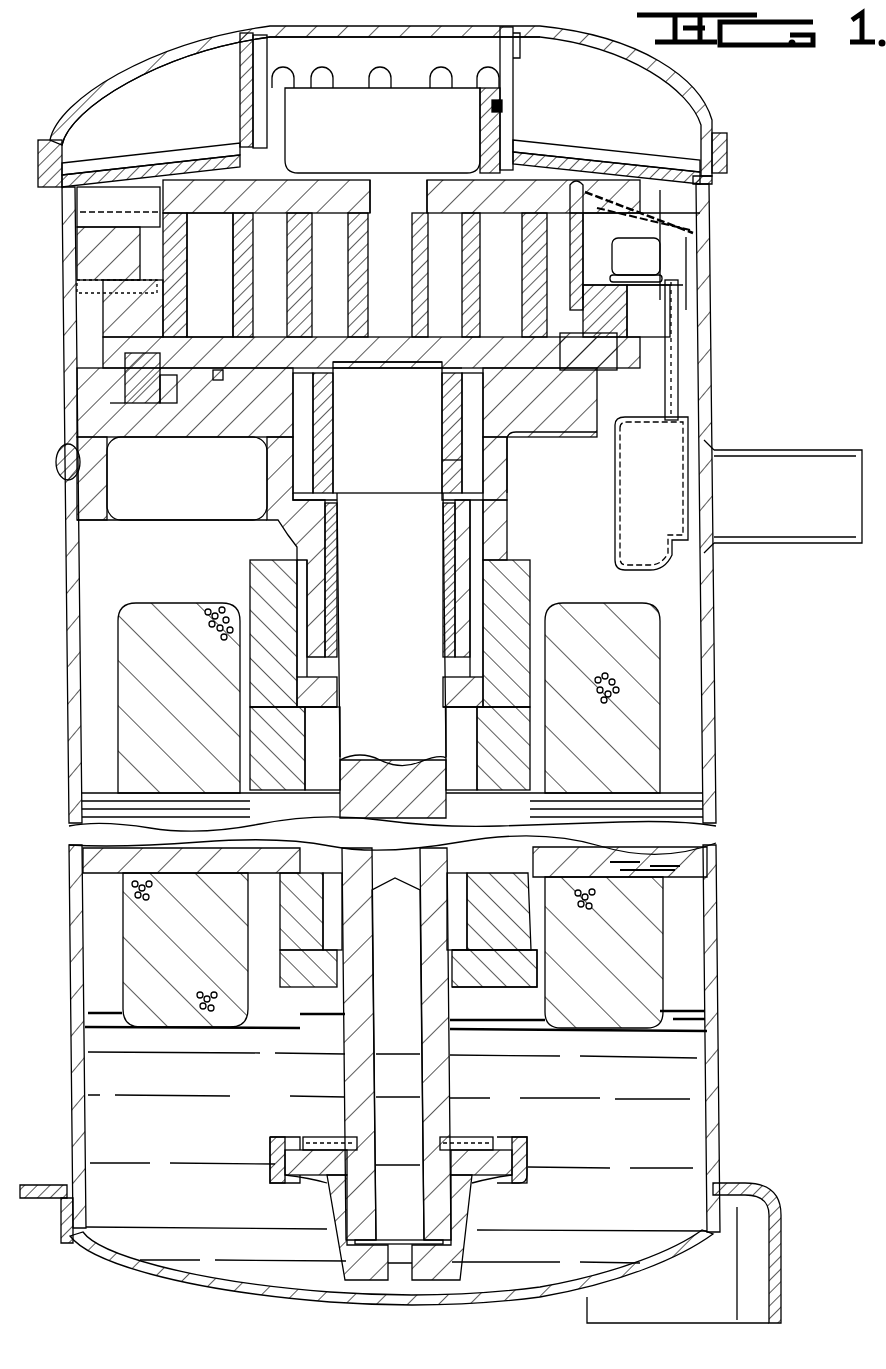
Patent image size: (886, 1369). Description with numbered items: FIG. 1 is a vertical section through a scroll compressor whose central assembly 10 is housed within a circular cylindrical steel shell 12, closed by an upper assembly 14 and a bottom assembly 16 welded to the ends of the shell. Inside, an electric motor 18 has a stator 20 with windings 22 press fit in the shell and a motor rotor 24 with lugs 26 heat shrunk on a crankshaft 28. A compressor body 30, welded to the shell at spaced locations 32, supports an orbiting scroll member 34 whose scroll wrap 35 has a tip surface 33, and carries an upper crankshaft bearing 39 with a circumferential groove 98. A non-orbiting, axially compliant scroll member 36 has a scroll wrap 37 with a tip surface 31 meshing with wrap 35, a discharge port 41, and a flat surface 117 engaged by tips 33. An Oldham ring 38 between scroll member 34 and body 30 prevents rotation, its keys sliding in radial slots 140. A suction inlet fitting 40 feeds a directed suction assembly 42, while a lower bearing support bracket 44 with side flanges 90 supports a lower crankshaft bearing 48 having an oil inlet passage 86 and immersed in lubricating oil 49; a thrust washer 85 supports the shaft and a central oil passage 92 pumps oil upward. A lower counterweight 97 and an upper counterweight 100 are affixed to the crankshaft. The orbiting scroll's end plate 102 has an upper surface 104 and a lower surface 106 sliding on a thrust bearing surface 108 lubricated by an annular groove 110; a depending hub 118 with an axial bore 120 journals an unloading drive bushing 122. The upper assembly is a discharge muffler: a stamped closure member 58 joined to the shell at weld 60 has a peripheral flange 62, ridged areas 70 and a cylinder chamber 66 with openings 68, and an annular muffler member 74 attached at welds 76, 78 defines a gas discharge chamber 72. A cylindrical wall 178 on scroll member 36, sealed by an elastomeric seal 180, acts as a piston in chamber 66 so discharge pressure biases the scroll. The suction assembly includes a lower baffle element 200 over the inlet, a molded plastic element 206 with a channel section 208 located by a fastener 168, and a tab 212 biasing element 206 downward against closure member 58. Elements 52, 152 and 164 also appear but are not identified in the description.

The central assembly 10 is at (48, 197).
The shell 12 is at (714, 632).
The upper assembly 14 is at (722, 96).
The bottom assembly 16 is at (796, 1262).
The electric motor 18 is at (553, 590).
The stator 20 is at (714, 806).
The windings 22 is at (612, 746).
The motor rotor 24 is at (443, 790).
The lugs 26 is at (395, 917).
The crankshaft 28 is at (391, 655).
The compressor body 30 is at (246, 416).
The tip surface 31 is at (253, 330).
The weld locations 32 is at (56, 470).
The tip surface 33 is at (462, 215).
The orbiting scroll member 34 is at (542, 358).
The scroll wrap 35 is at (233, 305).
The non-orbiting scroll member 36 is at (235, 200).
The scroll wrap 37 is at (480, 272).
The Oldham ring 38 is at (127, 385).
The upper crankshaft bearing 39 is at (337, 545).
The suction inlet fitting 40 is at (783, 496).
The discharge port 41 is at (390, 180).
The directed suction assembly 42 is at (606, 460).
The lower bearing support bracket 44 is at (510, 1183).
The lower crankshaft bearing 48 is at (340, 1205).
The lubricating oil 49 is at (396, 1137).
The base plate 52 is at (730, 1300).
The closure member 58 is at (163, 160).
The weld 60 is at (712, 188).
The peripheral flange 62 is at (732, 146).
The cylinder chamber 66 is at (500, 128).
The openings 68 is at (262, 97).
The embossed or ridged areas 70 is at (118, 165).
The gas discharge chamber 72 is at (132, 96).
The annular muffler member 74 is at (100, 90).
The weld 76 is at (44, 140).
The weld 78 is at (243, 45).
The thrust washer 85 is at (470, 1137).
The oil inlet passage 86 is at (396, 1240).
The side flanges 90 is at (270, 1150).
The central oil passage 92 is at (420, 1062).
The lower counterweight 97 is at (505, 975).
The circumferential groove 98 is at (337, 632).
The upper counterweight 100 is at (290, 690).
The end plate 102 is at (610, 360).
The upper surface 104 is at (330, 300).
The lower surface 106 is at (467, 375).
The thrust bearing surface 108 is at (320, 370).
The annular groove 110 is at (215, 370).
The flat surface 117 is at (264, 275).
The hub 118 is at (293, 470).
The axial bore 120 is at (442, 472).
The unloading drive bushing 122 is at (387, 427).
The radial slots 140 is at (130, 350).
The seal 152 is at (77, 287).
The discharge chamber 164 is at (103, 245).
The fasteners 168 is at (640, 242).
The cylindrical wall 178 is at (290, 133).
The elastomeric seal 180 is at (492, 106).
The lower baffle element 200 is at (651, 493).
The molded plastic element 206 is at (673, 253).
The channel section 208 is at (678, 372).
The tab 212 is at (648, 185).